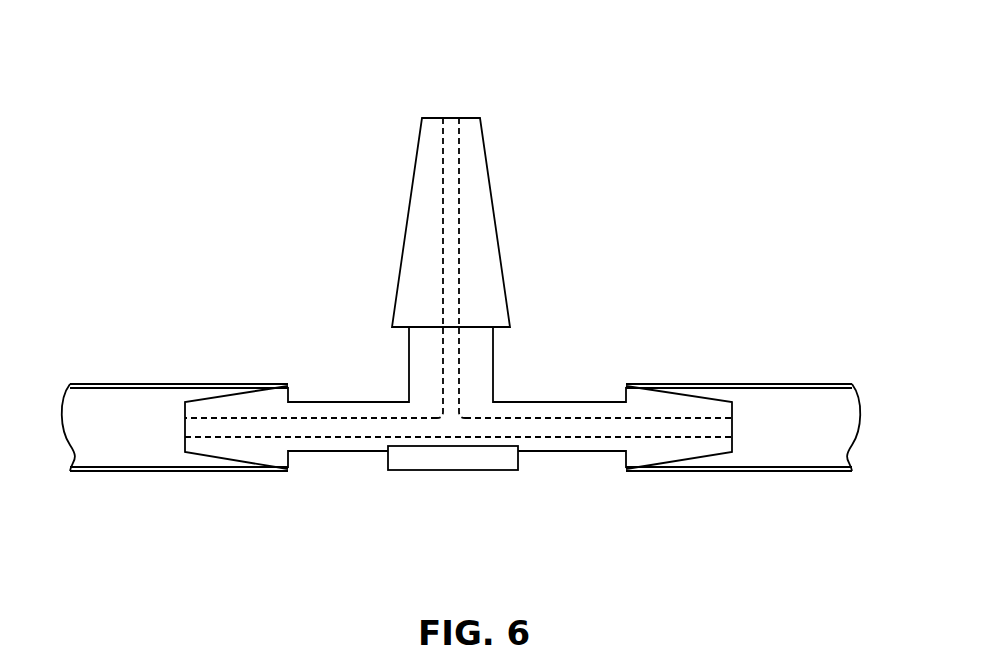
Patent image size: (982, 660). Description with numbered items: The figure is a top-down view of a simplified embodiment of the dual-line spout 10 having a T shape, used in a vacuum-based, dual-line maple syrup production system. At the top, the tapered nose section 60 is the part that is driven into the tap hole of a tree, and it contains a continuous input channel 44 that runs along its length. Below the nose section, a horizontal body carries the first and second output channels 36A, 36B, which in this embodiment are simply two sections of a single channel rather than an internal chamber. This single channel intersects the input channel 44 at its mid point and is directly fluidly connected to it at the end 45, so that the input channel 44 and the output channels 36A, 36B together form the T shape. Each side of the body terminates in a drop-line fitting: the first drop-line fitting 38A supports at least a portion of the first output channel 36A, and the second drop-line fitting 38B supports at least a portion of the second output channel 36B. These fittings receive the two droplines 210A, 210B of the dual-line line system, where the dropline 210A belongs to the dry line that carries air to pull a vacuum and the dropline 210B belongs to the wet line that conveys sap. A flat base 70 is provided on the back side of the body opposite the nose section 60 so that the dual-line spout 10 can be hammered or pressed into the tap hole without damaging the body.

The dual-line spout 10 is at (347, 107).
The nose section 60 is at (533, 193).
The input channel 44 is at (444, 212).
The end 45 is at (443, 412).
The first output channel 36A is at (313, 430).
The second output channel 36B is at (565, 422).
The flat base 70 is at (463, 470).
The first drop-line fitting 38A is at (234, 498).
The second drop-line fitting 38B is at (660, 487).
The dropline 210A is at (107, 387).
The dropline 210B is at (780, 387).